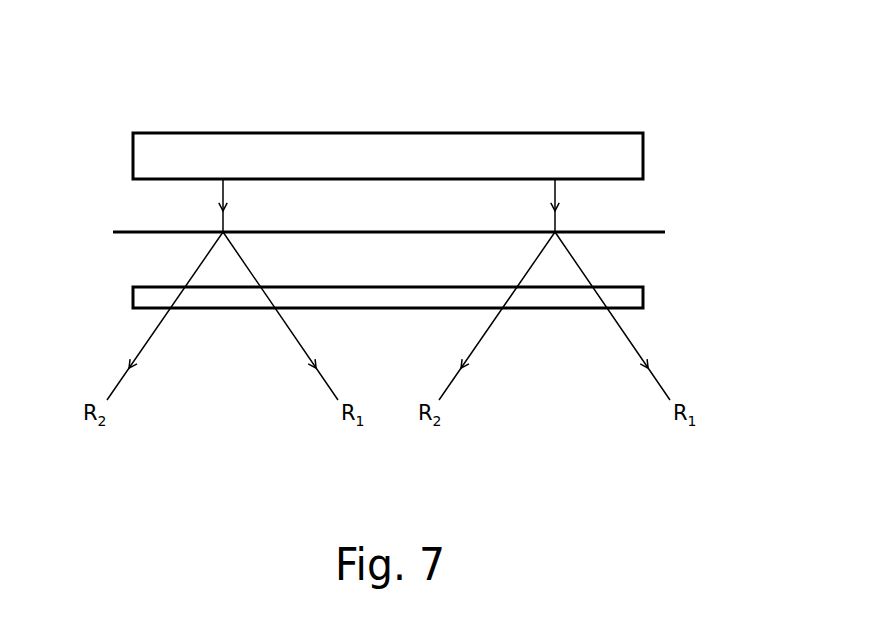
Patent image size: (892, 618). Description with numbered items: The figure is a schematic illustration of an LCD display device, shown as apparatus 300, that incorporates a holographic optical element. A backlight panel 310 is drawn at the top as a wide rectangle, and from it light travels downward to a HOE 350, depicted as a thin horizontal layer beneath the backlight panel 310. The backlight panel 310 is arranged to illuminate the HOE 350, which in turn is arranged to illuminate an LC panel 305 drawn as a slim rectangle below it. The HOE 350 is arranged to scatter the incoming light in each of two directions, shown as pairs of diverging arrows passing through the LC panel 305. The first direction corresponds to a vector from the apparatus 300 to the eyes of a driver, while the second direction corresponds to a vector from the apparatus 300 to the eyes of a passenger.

The apparatus 300 is at (83, 111).
The backlight panel 310 is at (645, 155).
The HOE 350 is at (650, 230).
The LC panel 305 is at (645, 297).